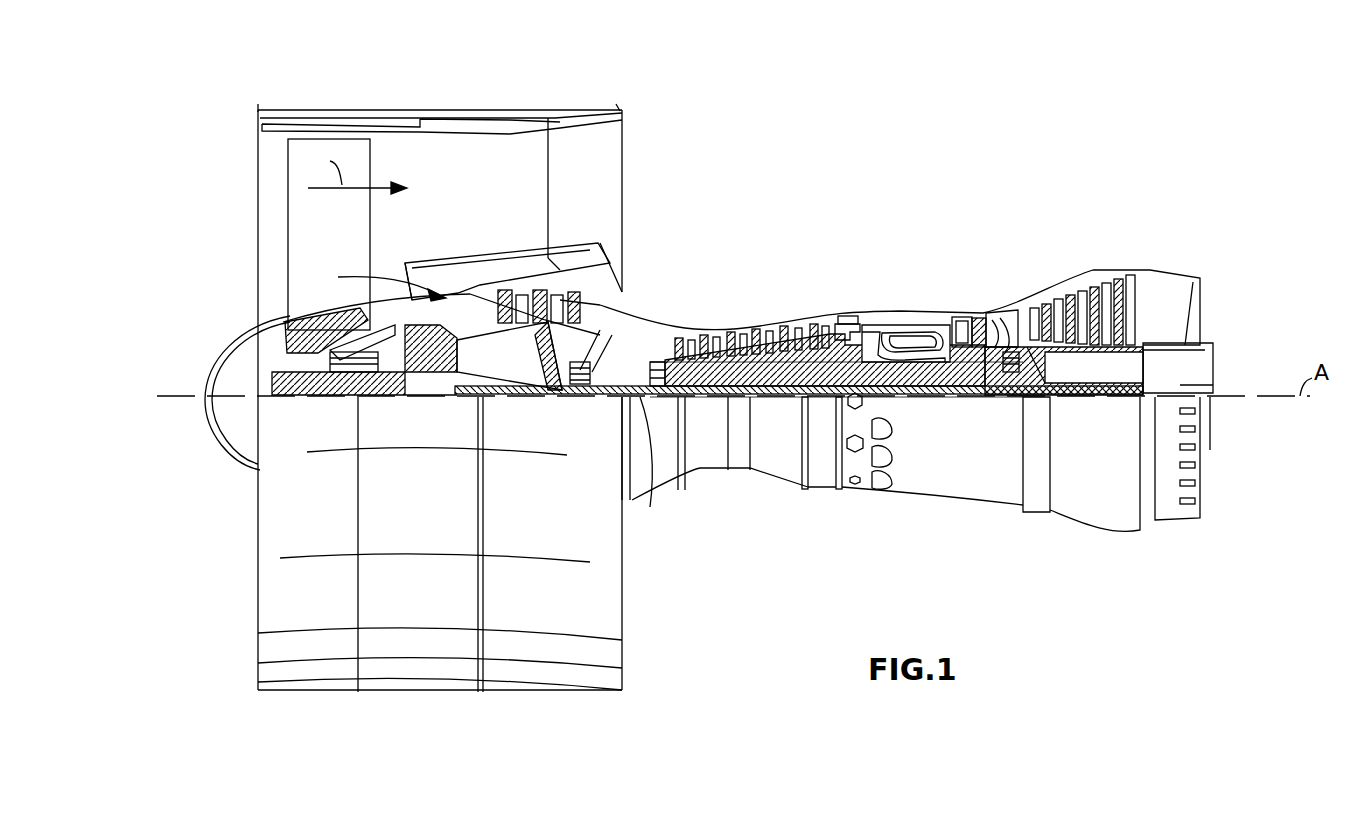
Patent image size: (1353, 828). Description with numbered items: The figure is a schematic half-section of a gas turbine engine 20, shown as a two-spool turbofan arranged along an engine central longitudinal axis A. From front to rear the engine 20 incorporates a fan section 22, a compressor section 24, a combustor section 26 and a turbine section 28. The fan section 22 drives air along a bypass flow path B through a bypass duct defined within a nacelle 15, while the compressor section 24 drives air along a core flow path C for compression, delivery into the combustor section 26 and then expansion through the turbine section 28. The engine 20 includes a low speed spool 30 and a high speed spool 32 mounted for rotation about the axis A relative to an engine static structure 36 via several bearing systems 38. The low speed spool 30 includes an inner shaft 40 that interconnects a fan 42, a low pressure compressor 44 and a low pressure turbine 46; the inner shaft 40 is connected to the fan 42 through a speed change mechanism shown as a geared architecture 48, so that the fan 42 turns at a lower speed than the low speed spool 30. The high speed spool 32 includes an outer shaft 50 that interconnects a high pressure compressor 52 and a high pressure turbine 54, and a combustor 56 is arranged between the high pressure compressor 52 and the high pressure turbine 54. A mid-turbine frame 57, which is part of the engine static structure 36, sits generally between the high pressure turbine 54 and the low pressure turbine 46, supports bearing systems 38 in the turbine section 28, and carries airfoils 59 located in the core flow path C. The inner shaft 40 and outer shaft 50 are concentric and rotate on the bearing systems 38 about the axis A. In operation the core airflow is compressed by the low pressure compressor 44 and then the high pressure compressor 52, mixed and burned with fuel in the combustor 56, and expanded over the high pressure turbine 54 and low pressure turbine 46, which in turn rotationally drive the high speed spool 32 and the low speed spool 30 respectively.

The nacelle 15 is at (440, 118).
The gas turbine engine 20 is at (900, 165).
The fan section 22 is at (370, 104).
The compressor section 24 is at (667, 308).
The combustor section 26 is at (895, 298).
The turbine section 28 is at (1042, 262).
The low speed spool 30 is at (780, 398).
The high speed spool 32 is at (823, 330).
The engine static structure 36 is at (820, 485).
The bearing systems 38 is at (580, 385).
The inner shaft 40 is at (640, 397).
The fan 42 is at (342, 241).
The low pressure compressor 44 is at (560, 300).
The low pressure turbine 46 is at (1088, 290).
The geared architecture 48 is at (445, 382).
The outer shaft 50 is at (890, 396).
The high pressure compressor 52 is at (750, 355).
The high pressure turbine 54 is at (962, 315).
The combustor 56 is at (900, 340).
The mid-turbine frame 57 is at (1002, 312).
The airfoils 59 is at (1000, 330).